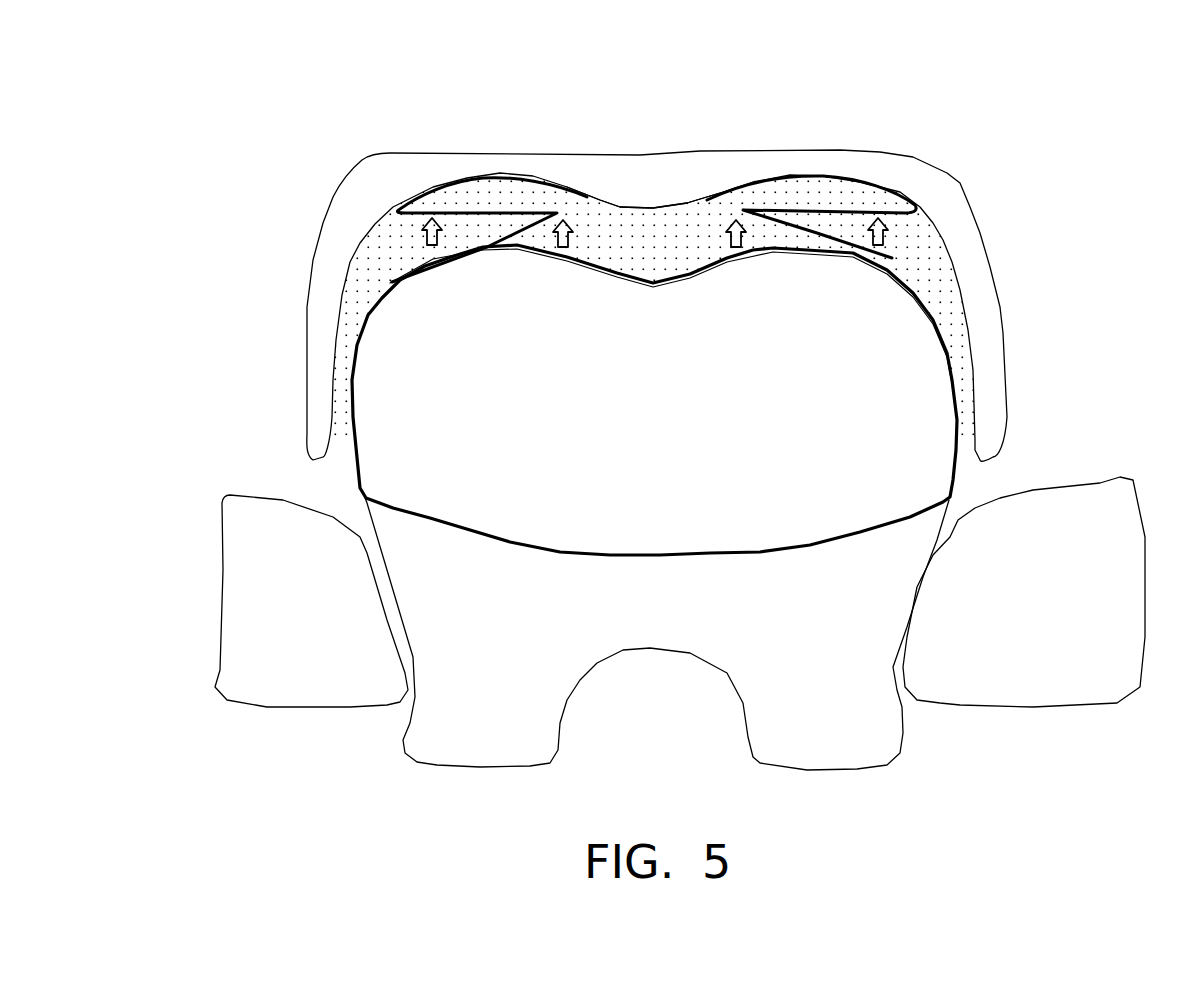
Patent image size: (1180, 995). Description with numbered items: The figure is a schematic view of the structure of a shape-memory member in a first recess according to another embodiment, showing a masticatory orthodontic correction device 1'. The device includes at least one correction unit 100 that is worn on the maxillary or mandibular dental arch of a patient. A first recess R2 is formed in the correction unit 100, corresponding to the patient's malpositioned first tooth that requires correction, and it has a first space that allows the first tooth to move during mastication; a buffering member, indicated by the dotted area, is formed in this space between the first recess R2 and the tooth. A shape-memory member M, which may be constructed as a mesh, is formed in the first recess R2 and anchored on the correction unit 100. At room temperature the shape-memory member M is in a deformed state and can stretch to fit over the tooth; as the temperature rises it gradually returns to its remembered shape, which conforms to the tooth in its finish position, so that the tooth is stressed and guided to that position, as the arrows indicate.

The masticatory orthodontic correction device 1' is at (669, 395).
The correction unit 100 is at (409, 151).
The first recess R2 is at (608, 203).
The shape-memory member M is at (803, 210).